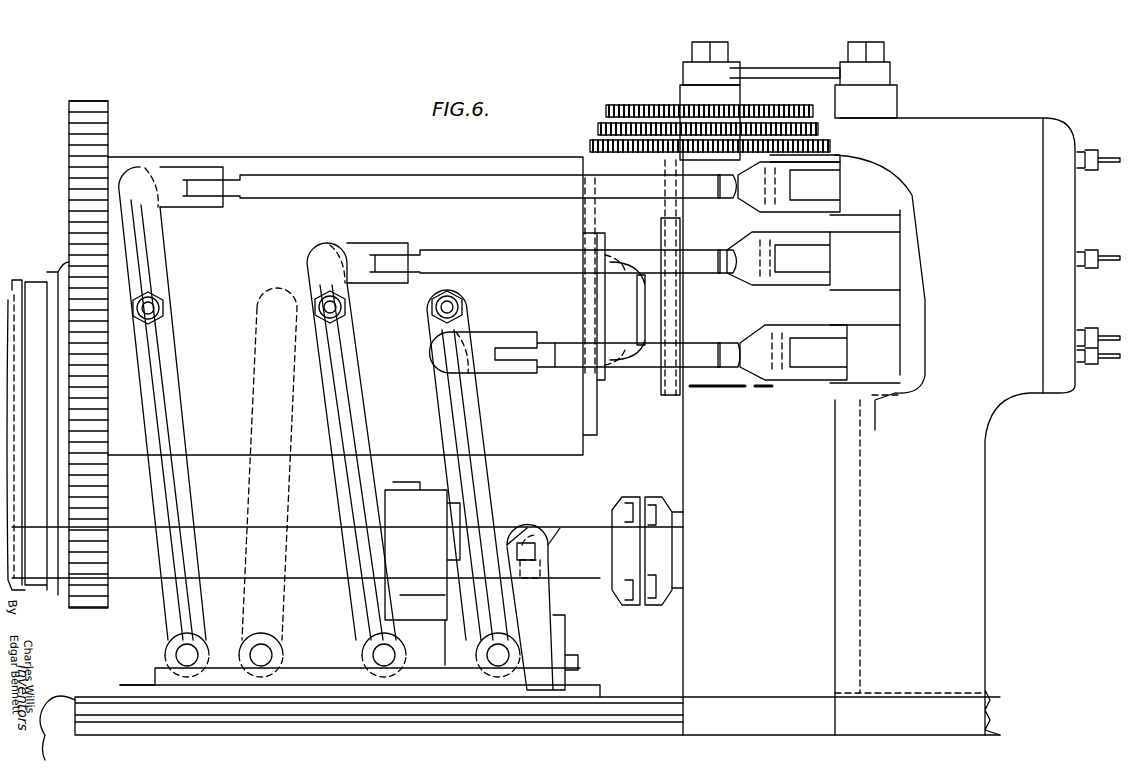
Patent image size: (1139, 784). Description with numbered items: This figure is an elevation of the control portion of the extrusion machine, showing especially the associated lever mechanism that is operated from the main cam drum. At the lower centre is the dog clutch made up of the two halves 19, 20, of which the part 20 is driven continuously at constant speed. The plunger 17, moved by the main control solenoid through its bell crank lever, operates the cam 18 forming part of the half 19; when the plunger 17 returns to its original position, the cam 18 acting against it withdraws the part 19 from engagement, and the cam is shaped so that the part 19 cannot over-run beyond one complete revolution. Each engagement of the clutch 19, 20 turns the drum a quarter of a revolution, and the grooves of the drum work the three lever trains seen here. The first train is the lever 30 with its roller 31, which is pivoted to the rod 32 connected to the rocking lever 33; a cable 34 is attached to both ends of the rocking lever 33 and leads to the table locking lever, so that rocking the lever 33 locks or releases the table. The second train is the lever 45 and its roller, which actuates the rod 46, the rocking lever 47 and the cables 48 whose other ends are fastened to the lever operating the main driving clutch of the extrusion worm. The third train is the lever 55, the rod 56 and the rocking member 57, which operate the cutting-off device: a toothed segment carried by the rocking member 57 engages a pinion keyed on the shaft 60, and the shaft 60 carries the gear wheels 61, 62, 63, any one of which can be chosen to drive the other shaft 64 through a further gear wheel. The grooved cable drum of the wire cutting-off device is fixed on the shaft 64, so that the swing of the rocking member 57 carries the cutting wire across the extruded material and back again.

The plunger 17 is at (535, 540).
The cam 18 is at (530, 540).
The dog clutch half 19 is at (628, 592).
The dog clutch half 20 is at (650, 592).
The lever 30 is at (345, 493).
The roller 31 is at (345, 299).
The rod 32 is at (492, 259).
The rocking lever 33 is at (806, 266).
The cable 34 is at (1114, 268).
The lever 45 is at (478, 413).
The rod 46 is at (715, 352).
The rocking lever 47 is at (818, 357).
The cables 48 is at (1118, 348).
The lever 55 is at (172, 600).
The rod 56 is at (270, 183).
The rocking member 57 is at (832, 185).
The shaft 60 is at (706, 42).
The gear wheel 61 is at (590, 145).
The gear wheel 62 is at (598, 128).
The gear wheel 63 is at (606, 109).
The shaft 64 is at (868, 42).